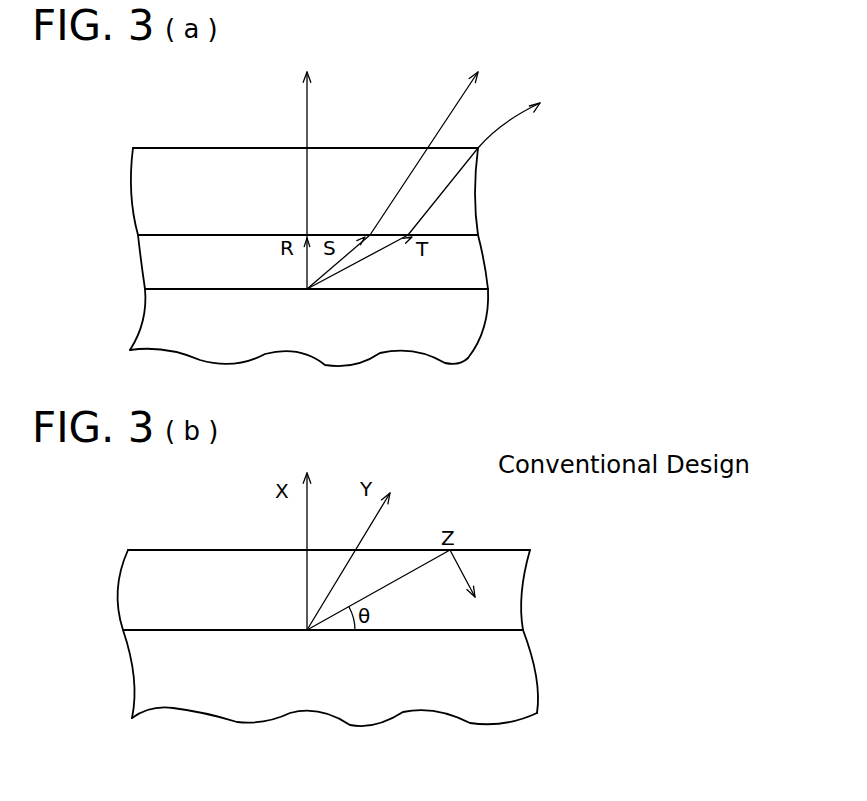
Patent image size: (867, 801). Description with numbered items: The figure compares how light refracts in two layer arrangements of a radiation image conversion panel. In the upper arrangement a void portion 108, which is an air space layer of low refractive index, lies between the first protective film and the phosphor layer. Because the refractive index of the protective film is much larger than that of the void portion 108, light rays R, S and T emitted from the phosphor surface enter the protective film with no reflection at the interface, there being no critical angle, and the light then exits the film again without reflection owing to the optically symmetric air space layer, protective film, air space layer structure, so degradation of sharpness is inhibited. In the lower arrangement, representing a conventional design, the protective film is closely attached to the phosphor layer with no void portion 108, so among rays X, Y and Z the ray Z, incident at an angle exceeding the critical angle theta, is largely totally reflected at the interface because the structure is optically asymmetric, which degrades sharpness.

The void portion 108 is at (466, 267).